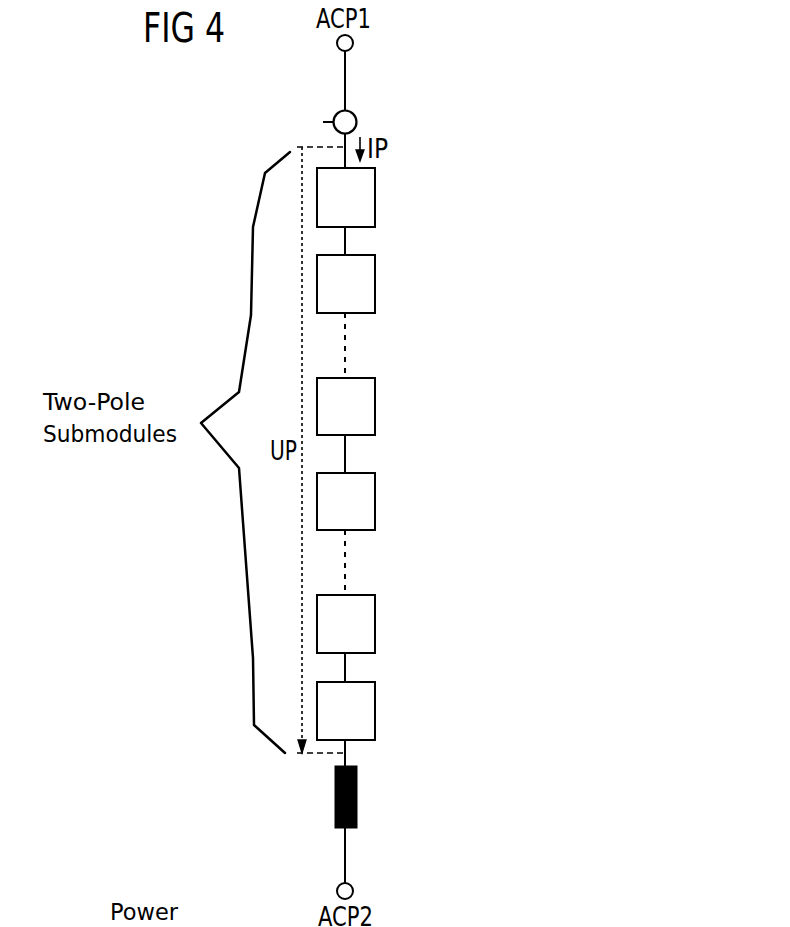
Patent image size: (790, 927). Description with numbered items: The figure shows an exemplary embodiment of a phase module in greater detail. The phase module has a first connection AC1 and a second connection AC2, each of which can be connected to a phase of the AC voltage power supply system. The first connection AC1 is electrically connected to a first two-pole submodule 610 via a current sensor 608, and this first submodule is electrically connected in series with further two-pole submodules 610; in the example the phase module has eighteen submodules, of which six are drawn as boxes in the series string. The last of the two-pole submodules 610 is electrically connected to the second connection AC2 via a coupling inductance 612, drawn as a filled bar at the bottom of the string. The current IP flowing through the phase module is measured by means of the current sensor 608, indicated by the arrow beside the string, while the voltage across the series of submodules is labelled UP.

The current sensor 608 is at (356, 122).
The two-pole submodule 610 is at (375, 197).
The coupling inductance 612 is at (357, 793).